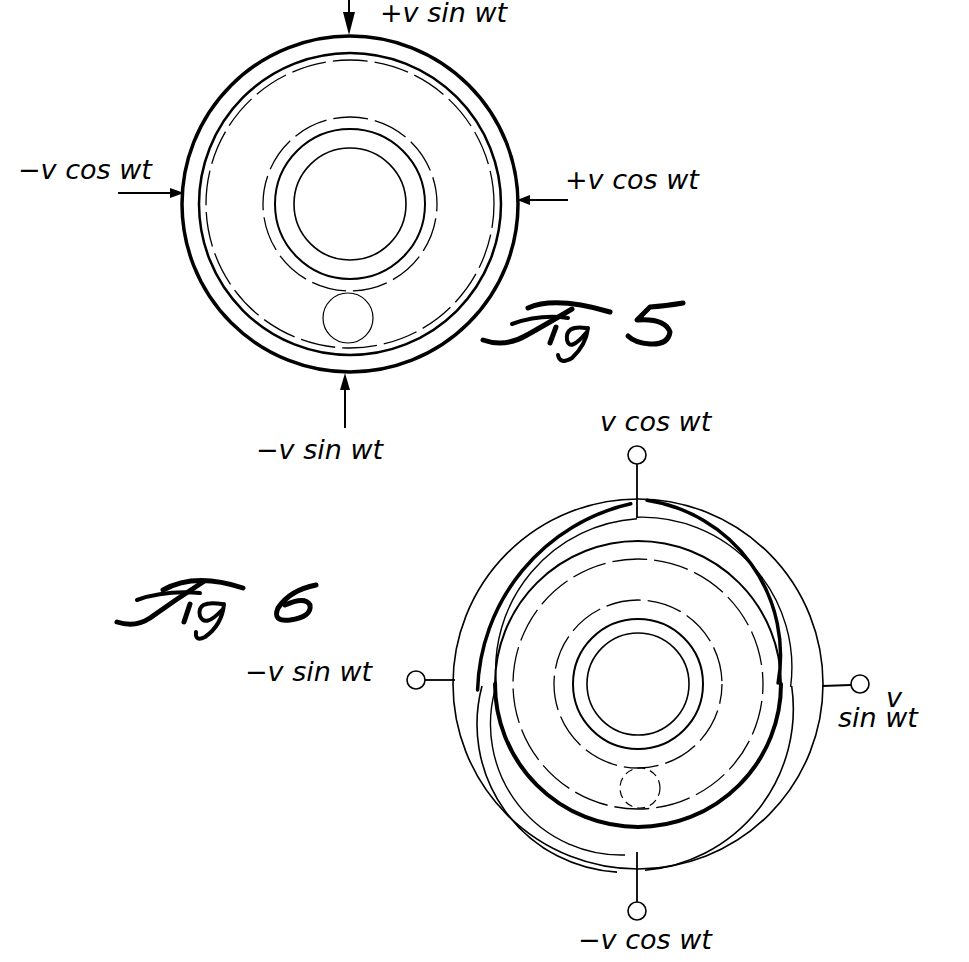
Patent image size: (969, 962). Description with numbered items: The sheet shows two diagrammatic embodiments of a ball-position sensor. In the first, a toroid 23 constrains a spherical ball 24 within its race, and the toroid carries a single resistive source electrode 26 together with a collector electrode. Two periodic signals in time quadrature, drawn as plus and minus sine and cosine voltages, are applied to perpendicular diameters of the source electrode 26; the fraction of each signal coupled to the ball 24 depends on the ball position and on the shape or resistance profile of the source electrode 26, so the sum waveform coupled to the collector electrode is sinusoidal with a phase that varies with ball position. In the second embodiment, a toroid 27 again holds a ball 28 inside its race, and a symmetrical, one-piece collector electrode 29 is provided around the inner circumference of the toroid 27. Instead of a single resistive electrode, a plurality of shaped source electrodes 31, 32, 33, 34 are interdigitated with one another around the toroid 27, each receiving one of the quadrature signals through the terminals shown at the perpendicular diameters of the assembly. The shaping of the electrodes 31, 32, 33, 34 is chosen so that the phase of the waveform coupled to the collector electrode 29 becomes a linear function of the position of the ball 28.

In FIG. 5, the toroid 23 is at (447, 110).
In FIG. 5, the spherical ball 24 is at (360, 328).
In FIG. 5, the resistive source electrode 26 is at (490, 128).
In FIG. 5, the toroid 27 is at (352, 145).
In FIG. 6, the toroid 27 is at (705, 607).
In FIG. 6, the ball 28 is at (662, 784).
In FIG. 6, the collector electrode 29 is at (685, 670).
In FIG. 6, the shaped electrode 31 is at (787, 768).
In FIG. 6, the shaped electrode 32 is at (487, 768).
In FIG. 6, the shaped electrode 33 is at (624, 850).
In FIG. 6, the shaped electrode 34 is at (677, 540).